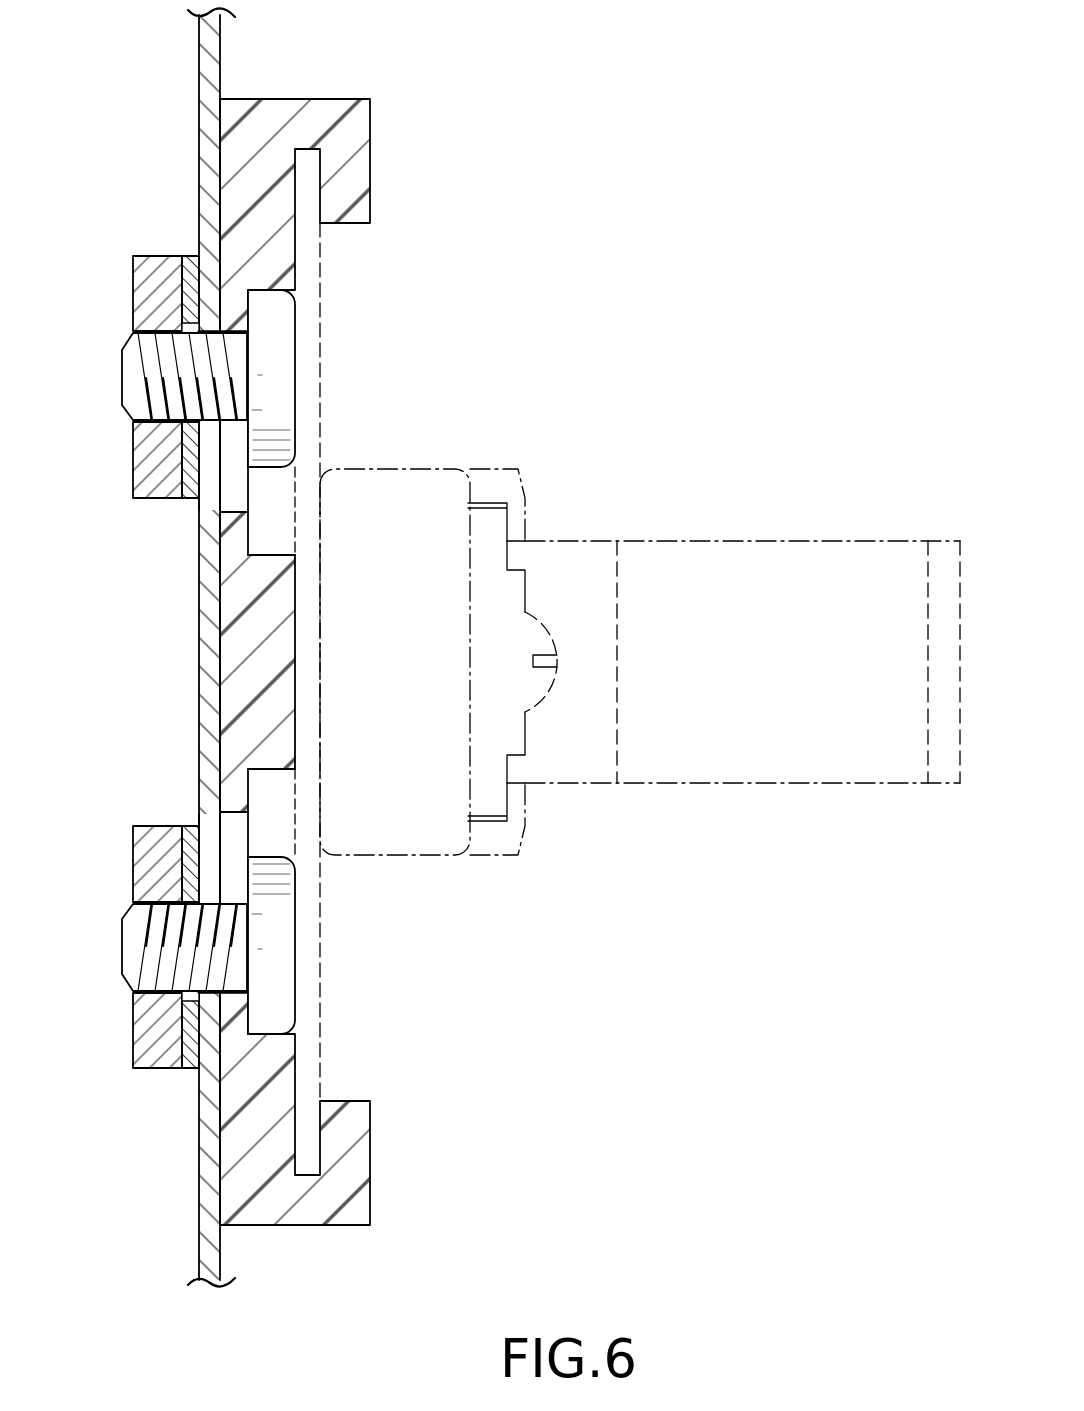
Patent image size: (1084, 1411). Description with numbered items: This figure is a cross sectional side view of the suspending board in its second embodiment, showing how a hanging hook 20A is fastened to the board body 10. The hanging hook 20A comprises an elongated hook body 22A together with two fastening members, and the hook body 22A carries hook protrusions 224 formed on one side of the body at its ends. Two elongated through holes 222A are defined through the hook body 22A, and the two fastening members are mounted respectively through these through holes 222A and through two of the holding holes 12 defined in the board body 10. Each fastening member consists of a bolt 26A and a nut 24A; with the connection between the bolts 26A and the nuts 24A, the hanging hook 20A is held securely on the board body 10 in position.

The board body 10 is at (247, 52).
The holding hole 12 is at (199, 505).
The hanging hook 20A is at (370, 645).
The hook body 22A is at (298, 702).
The elongated through hole 222A is at (257, 555).
The hook protrusion 224 is at (353, 181).
The nut 24A is at (277, 367).
The bolt 26A is at (150, 285).